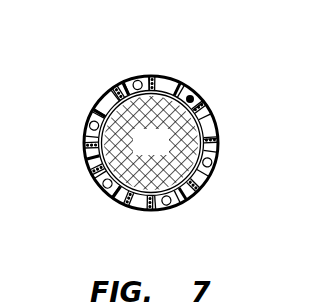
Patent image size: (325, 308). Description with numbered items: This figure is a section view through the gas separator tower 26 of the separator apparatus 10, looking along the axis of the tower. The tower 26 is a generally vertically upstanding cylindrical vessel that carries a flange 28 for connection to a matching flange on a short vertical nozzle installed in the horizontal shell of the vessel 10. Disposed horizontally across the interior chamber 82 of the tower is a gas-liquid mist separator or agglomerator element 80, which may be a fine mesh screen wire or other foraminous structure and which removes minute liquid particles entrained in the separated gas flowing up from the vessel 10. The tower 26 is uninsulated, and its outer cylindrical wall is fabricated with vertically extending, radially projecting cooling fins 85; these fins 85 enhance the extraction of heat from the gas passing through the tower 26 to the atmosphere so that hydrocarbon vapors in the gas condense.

The separator apparatus 10 is at (136, 68).
The gas separator tower 26 is at (216, 128).
The flange 28 is at (137, 206).
The gas-liquid mist separator element 80 is at (197, 97).
The interior chamber 82 is at (162, 153).
The cooling fins 85 is at (85, 118).